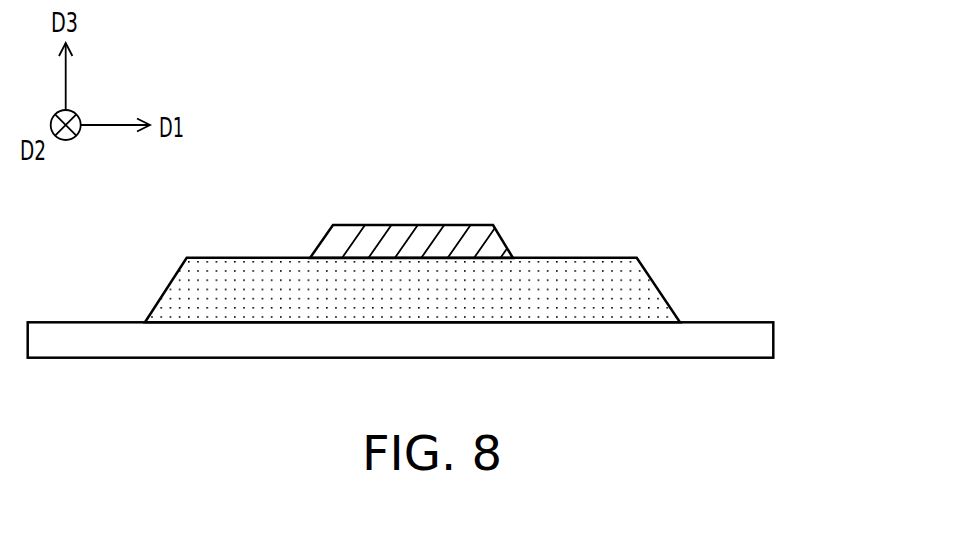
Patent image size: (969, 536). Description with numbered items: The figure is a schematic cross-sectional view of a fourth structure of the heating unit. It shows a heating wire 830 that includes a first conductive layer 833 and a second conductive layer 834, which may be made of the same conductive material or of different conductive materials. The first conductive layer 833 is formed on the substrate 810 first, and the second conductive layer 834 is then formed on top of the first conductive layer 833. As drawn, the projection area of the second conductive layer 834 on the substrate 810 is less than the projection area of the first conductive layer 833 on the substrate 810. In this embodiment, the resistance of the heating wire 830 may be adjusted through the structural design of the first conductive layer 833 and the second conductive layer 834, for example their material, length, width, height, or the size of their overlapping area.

The substrate 810 is at (763, 338).
The heating wire 830 is at (471, 247).
The first conductive layer 833 is at (635, 282).
The second conductive layer 834 is at (493, 239).